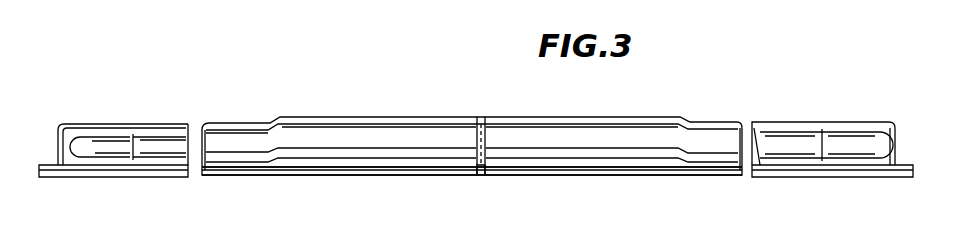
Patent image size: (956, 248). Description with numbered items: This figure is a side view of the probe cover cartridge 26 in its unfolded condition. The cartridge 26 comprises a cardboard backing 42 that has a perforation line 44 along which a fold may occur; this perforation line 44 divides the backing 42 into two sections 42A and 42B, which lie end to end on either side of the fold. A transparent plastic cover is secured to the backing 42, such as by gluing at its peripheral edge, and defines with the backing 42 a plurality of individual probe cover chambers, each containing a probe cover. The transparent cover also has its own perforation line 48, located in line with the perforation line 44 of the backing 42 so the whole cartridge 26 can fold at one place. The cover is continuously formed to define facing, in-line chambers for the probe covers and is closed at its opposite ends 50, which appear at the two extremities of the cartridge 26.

The cartridge 26 is at (585, 138).
The cardboard backing 42 is at (502, 175).
The backing section 42A is at (592, 175).
The backing section 42B is at (320, 171).
The perforation line 44 is at (480, 175).
The perforation line 48 is at (478, 125).
The opposite ends 50 is at (81, 137).